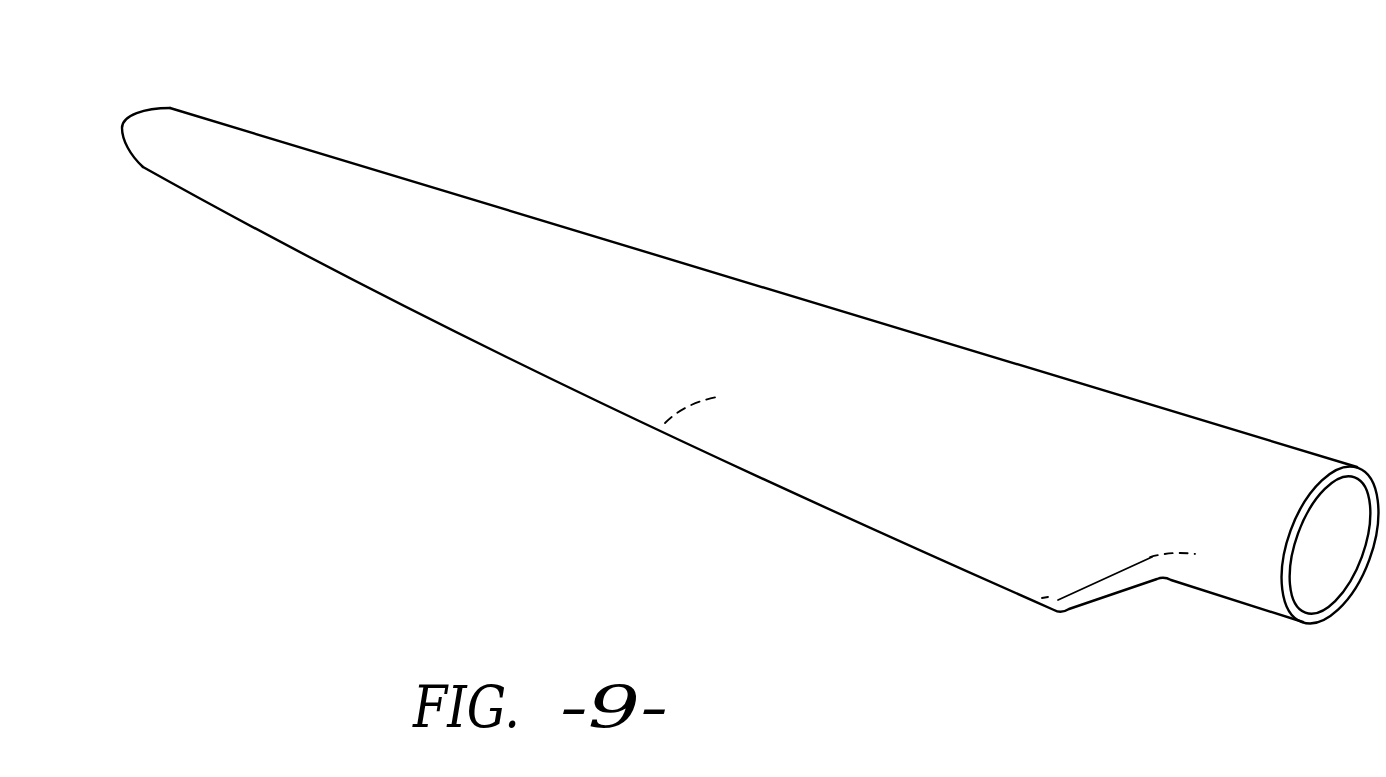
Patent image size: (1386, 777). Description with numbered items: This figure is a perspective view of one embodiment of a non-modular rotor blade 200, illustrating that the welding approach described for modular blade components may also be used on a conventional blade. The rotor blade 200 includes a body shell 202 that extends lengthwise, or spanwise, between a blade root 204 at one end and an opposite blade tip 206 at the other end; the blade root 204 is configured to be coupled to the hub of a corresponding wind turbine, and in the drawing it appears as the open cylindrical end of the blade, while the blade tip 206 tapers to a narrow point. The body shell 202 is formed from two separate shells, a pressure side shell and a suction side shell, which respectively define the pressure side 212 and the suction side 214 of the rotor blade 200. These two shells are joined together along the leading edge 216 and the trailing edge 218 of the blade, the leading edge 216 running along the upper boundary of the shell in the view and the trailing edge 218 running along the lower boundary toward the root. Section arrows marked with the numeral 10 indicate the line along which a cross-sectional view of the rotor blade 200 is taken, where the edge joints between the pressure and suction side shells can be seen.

The section line 10- 10 is at (573, 193).
The non-modular rotor blade 200 is at (1122, 105).
The body shell 202 is at (790, 340).
The blade root 204 is at (1243, 570).
The blade tip 206 is at (122, 125).
The pressure side 212 is at (662, 428).
The suction side 214 is at (817, 452).
The leading edge 216 is at (1027, 368).
The trailing edge 218 is at (912, 548).